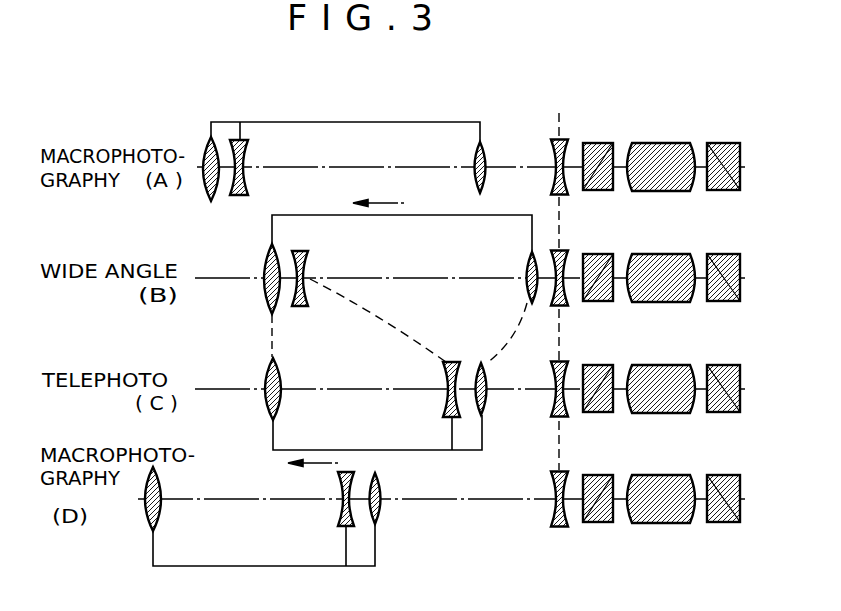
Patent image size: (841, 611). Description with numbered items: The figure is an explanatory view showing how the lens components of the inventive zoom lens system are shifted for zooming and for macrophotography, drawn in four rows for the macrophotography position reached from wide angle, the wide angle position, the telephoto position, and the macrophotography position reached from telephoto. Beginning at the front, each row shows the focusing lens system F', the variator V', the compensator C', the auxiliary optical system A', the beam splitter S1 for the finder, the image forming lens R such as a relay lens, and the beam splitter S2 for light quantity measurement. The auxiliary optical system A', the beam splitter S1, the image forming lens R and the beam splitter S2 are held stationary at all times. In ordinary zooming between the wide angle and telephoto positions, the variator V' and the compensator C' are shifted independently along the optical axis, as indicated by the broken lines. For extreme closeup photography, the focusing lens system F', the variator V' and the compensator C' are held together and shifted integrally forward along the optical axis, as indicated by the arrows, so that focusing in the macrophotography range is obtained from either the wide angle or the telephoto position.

The focusing lens system F' is at (210, 144).
The variator V' is at (242, 141).
The compensator C' is at (492, 140).
The auxiliary optical system A' is at (561, 141).
The beam splitter for the finder S1 is at (598, 142).
The image forming lens R is at (660, 142).
The beam splitter for the measurement of light quantity S2 is at (722, 142).